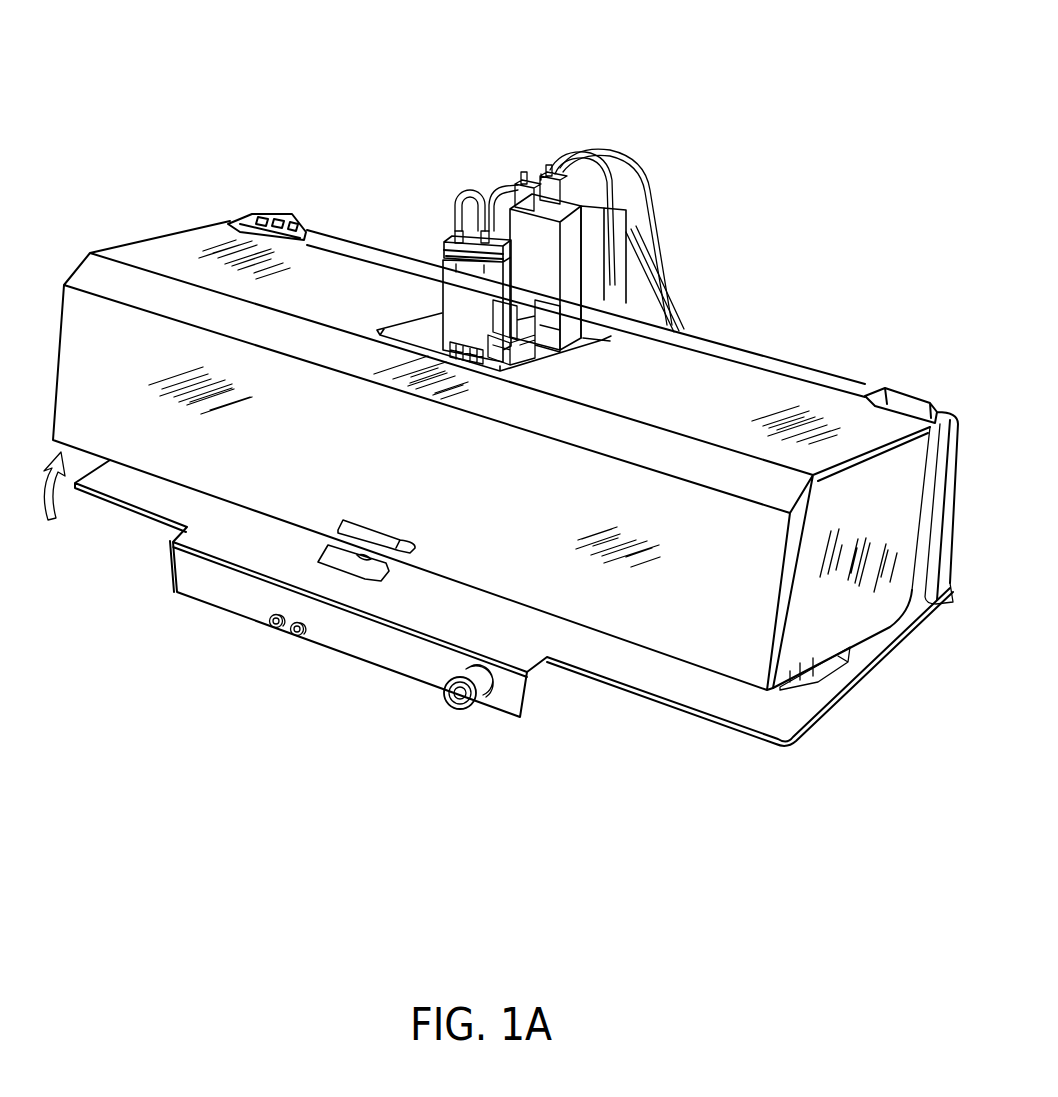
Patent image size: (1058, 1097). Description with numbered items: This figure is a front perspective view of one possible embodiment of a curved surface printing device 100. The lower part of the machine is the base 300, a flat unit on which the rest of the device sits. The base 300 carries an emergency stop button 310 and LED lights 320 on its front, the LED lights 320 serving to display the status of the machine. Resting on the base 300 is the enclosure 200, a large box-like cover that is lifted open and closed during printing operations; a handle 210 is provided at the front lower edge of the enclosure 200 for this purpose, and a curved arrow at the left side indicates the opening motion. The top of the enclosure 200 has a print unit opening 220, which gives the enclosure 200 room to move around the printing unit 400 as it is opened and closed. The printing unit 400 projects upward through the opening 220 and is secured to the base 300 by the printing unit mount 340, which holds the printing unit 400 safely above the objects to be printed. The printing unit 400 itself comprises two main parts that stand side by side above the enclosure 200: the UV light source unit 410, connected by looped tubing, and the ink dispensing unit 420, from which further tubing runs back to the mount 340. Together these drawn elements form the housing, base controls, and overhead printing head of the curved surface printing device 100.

The curved surface printing device 100 is at (817, 105).
The enclosure 200 is at (178, 252).
The handle 210 is at (365, 533).
The print unit opening 220 is at (407, 323).
The base unit 300 is at (214, 578).
The emergency button 310 is at (457, 698).
The LED 320 is at (293, 631).
The mount 340 is at (610, 280).
The printing unit 400 is at (453, 184).
The UV light source 410 is at (450, 297).
The ink dispensing unit 420 is at (522, 228).